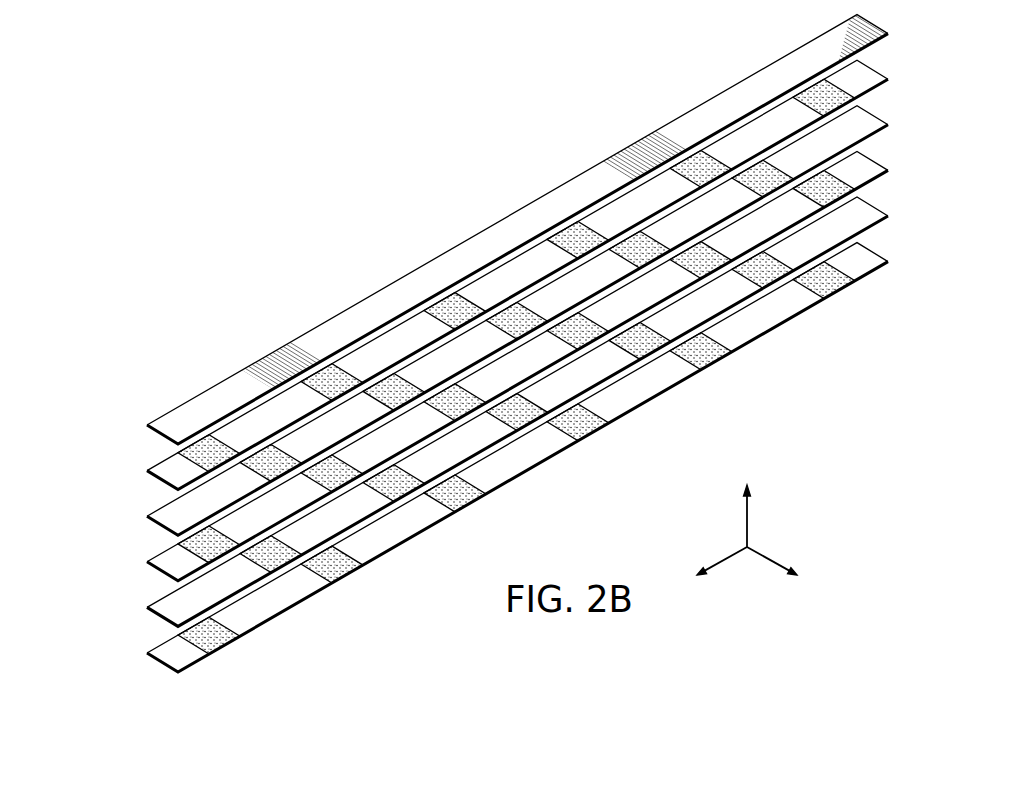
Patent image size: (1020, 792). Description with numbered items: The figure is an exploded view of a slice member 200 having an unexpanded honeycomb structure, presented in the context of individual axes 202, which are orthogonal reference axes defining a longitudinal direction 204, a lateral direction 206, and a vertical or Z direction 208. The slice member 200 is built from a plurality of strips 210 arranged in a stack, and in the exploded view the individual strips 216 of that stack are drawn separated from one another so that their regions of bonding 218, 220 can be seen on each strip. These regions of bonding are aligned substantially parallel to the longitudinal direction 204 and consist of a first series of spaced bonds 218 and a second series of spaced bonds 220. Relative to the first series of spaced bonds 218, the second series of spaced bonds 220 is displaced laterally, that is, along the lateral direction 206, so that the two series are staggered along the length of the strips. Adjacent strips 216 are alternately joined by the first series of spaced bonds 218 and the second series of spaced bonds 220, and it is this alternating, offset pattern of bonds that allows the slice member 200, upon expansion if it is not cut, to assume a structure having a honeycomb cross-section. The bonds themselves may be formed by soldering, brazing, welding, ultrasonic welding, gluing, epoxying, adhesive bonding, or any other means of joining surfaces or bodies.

The slice member 200 is at (368, 164).
The individual axes 202 is at (790, 491).
The longitudinal direction 204 is at (766, 558).
The lateral direction 206 is at (725, 562).
The vertical direction 208 is at (745, 510).
The plurality of strips 210 is at (78, 370).
The individual strips 216 is at (150, 424).
The first series of spaced bonds 218 is at (271, 463).
The second series of spaced bonds 220 is at (209, 453).